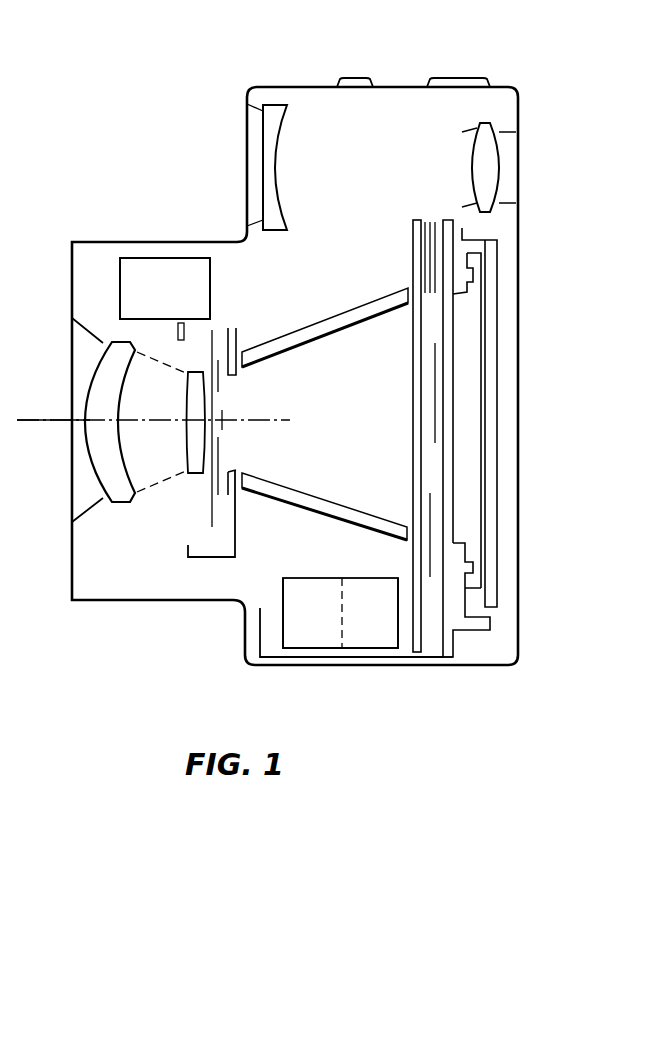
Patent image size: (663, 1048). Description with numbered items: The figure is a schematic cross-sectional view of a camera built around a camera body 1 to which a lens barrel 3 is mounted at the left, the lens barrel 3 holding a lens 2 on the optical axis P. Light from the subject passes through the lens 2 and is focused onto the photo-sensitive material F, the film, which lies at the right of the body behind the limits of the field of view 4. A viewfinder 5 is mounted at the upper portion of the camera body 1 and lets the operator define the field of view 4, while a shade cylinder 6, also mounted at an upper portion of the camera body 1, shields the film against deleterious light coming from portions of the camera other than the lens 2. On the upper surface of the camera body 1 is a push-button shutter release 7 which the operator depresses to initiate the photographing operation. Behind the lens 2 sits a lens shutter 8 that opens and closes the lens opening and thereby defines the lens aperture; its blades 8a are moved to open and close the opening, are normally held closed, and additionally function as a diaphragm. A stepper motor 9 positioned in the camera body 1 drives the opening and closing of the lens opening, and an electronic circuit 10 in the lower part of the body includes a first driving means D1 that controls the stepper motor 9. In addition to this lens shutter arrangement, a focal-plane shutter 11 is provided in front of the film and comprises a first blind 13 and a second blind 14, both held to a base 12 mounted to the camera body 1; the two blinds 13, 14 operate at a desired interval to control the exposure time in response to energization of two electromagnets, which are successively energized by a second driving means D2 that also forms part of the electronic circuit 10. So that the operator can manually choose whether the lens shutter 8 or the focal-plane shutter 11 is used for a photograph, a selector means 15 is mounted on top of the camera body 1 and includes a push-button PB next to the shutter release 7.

The camera body 1 is at (265, 665).
The lens 2 is at (97, 458).
The lens barrel 3 is at (97, 240).
The field of view 4 is at (445, 545).
The viewfinder 5 is at (248, 157).
The shade cylinder 6 is at (310, 323).
The push-button shutter release 7 is at (360, 76).
The lens shutter 8 is at (188, 557).
The blades 8a is at (222, 440).
The stepper motor 9 is at (170, 275).
The electronic circuit 10 is at (308, 577).
The focal-plane shutter 11 is at (430, 380).
The base 12 is at (450, 646).
The first blind 13 is at (430, 467).
The second blind 14 is at (430, 222).
The selector means 15 is at (489, 70).
The photo-sensitive material F is at (468, 383).
The optical axis P is at (33, 417).
The push-button PB is at (445, 77).
The first driving means D1 is at (308, 638).
The second driving means D2 is at (377, 638).